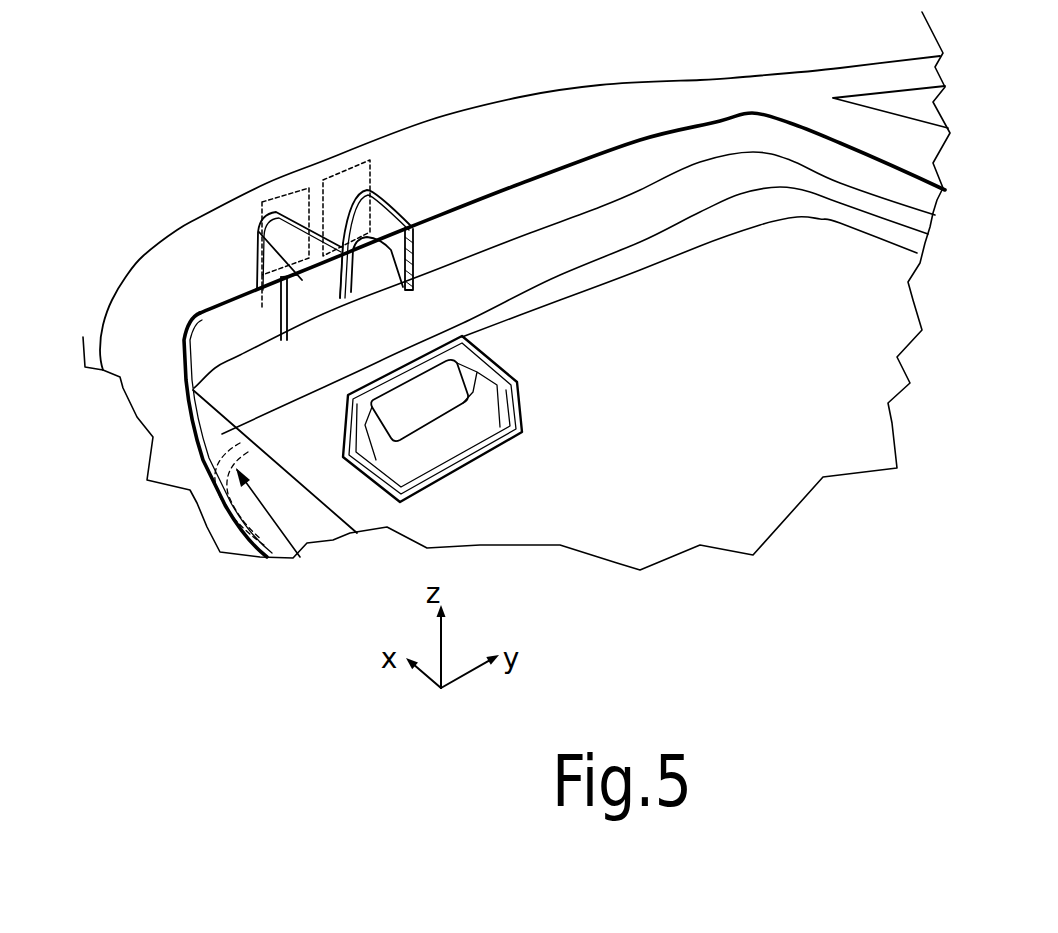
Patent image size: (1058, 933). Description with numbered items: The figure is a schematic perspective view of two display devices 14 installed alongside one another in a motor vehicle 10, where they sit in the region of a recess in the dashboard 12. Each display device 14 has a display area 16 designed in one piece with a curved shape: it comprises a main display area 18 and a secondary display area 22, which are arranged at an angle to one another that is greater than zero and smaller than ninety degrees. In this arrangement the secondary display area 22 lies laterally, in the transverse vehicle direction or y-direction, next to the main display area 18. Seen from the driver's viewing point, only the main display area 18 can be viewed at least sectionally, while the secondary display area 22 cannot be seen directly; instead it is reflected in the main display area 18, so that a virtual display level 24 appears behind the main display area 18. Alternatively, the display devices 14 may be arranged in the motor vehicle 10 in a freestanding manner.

The motor vehicle 10 is at (134, 239).
The dashboard 12 is at (472, 315).
The display device 14 is at (236, 250).
The display area 16 is at (321, 280).
The main display area 18 is at (382, 220).
The secondary display area 22 is at (273, 320).
The virtual display level 24 is at (287, 200).